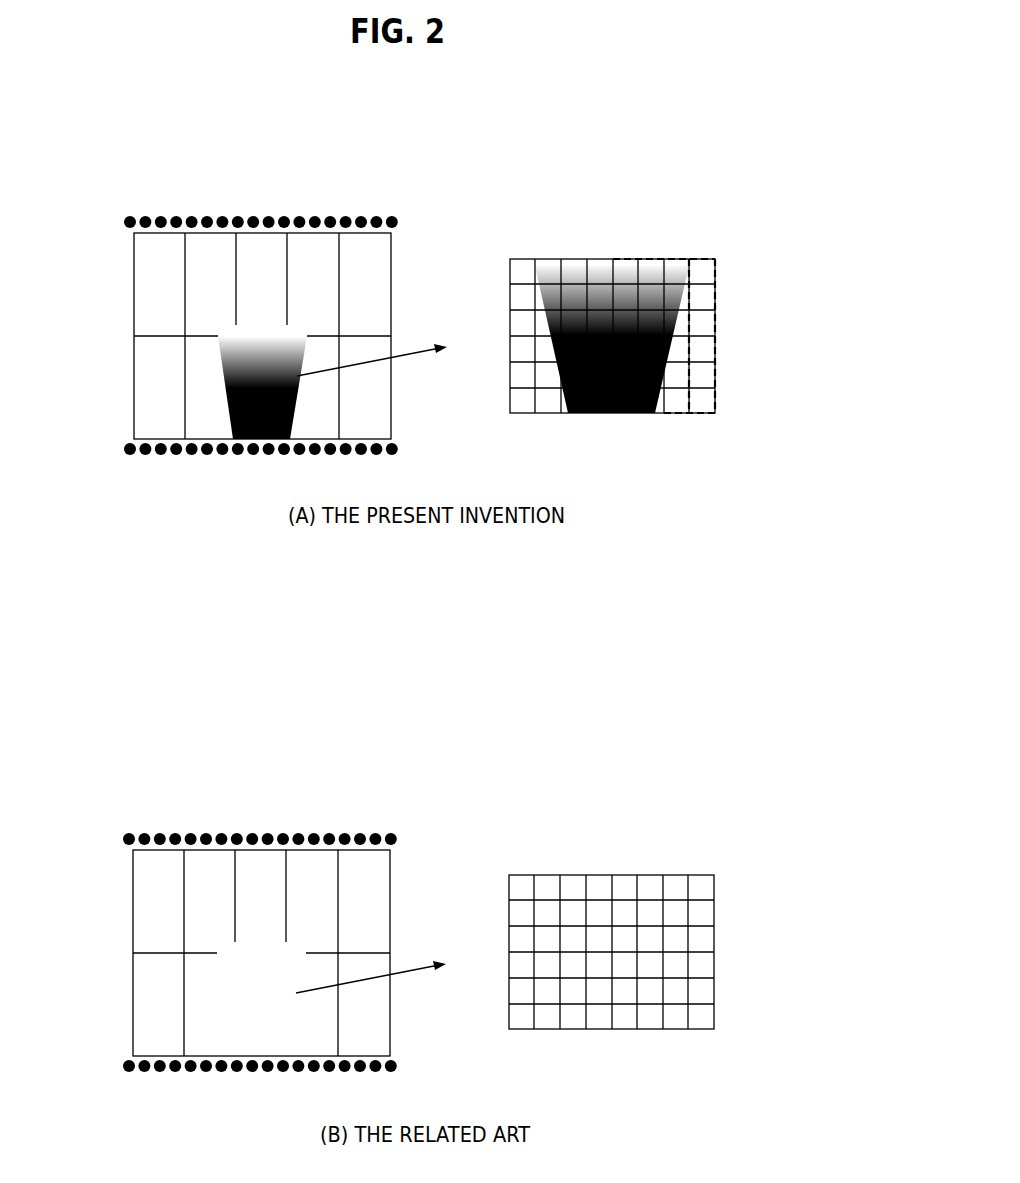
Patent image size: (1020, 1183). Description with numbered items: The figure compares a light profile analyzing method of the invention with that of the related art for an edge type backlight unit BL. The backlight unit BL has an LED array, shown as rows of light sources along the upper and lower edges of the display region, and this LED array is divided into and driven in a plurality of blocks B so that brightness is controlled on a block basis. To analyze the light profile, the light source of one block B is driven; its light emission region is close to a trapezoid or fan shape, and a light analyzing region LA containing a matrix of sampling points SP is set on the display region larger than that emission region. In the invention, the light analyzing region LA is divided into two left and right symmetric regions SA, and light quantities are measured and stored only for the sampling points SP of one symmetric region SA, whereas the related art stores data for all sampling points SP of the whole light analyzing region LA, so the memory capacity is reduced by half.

The LED array LED is at (147, 218).
The edge type backlight unit BL is at (104, 281).
The block B is at (332, 667).
The sampling point SP is at (517, 270).
The light analyzing region LA is at (676, 243).
The symmetric region SA is at (715, 315).